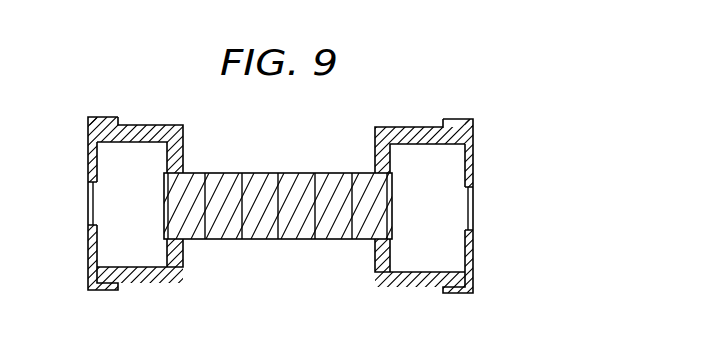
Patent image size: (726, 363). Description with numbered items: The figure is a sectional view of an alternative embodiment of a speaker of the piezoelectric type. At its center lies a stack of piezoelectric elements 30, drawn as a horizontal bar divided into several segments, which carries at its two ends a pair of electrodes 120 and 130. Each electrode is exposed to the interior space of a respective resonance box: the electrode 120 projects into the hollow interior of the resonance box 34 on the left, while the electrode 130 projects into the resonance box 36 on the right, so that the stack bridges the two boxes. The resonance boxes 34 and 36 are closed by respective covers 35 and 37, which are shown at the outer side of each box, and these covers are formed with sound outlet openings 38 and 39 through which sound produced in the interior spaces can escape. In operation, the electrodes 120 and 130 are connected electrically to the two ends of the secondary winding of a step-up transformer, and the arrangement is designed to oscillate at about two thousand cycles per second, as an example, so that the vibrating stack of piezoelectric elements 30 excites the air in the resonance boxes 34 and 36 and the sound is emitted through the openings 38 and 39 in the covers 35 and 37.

The stack of piezoelectric elements 30 is at (300, 233).
The resonance box 34 is at (185, 138).
The cover 35 is at (88, 128).
The resonance box 36 is at (375, 138).
The cover 37 is at (474, 133).
The sound outlet opening 38 is at (92, 204).
The sound outlet opening 39 is at (475, 205).
The electrode 120 is at (164, 188).
The electrode 130 is at (392, 190).